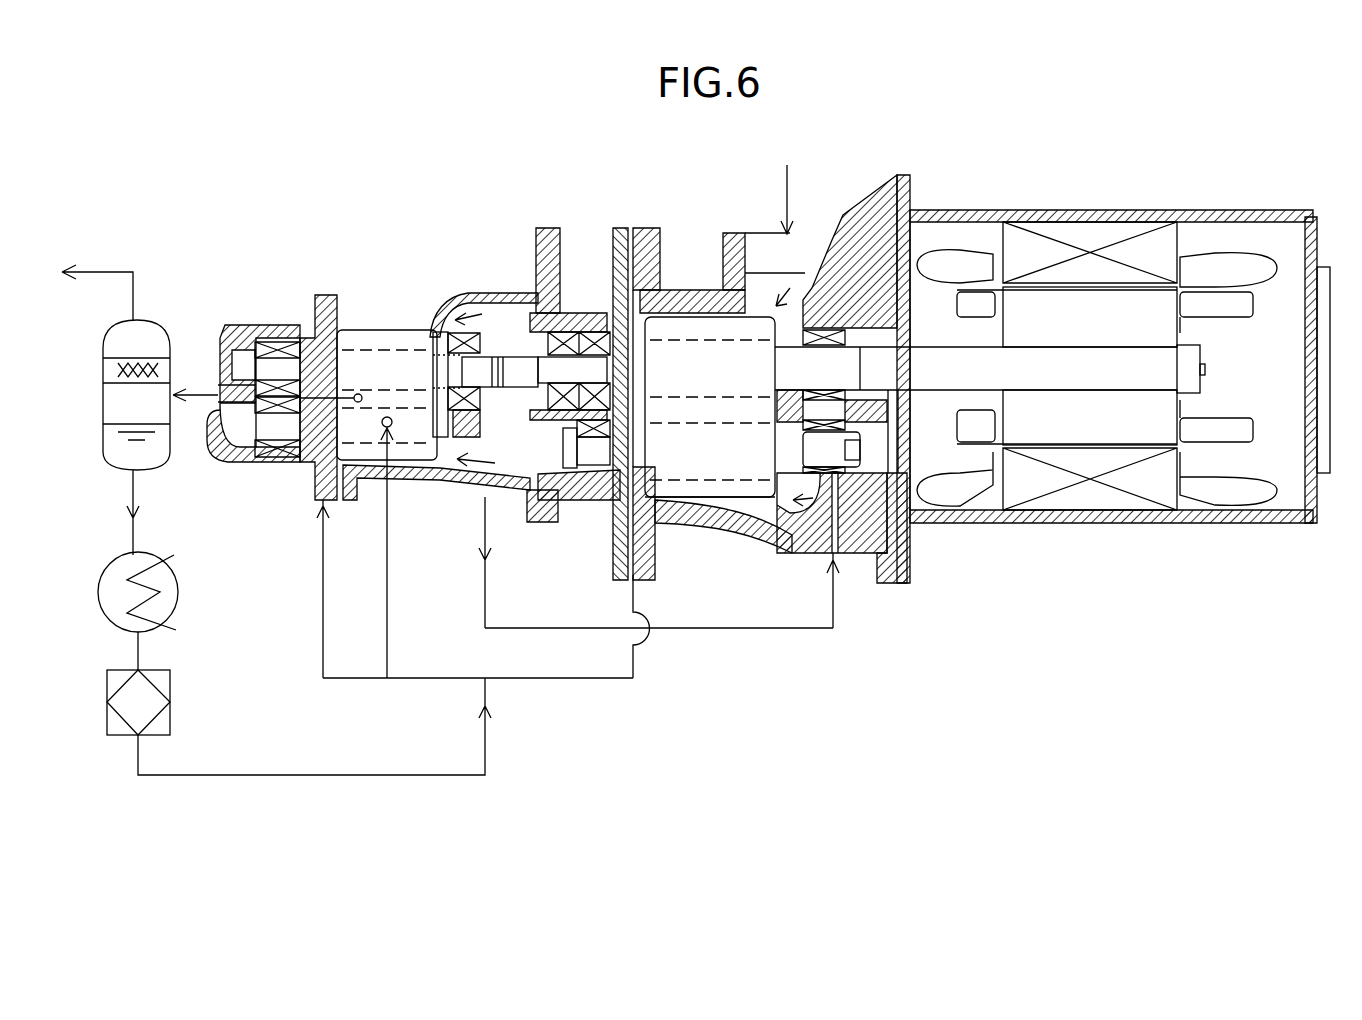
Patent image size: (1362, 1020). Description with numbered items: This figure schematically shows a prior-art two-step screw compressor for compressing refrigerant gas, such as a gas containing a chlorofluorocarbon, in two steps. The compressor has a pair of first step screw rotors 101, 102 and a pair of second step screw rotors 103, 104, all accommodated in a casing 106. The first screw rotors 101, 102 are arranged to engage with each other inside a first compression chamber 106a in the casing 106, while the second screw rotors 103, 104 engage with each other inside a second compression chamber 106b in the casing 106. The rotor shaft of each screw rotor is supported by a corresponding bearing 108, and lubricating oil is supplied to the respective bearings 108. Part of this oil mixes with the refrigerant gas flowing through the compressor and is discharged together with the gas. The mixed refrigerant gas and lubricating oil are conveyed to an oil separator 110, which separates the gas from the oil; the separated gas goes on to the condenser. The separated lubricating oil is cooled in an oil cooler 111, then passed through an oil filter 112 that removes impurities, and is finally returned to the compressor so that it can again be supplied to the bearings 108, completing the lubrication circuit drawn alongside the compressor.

The first step screw rotor 101 is at (665, 330).
The first step screw rotor 102 is at (710, 485).
The second step screw rotor 103 is at (355, 335).
The second step screw rotor 104 is at (365, 460).
The casing 106 is at (905, 180).
The first compression chamber 106a is at (775, 535).
The second compression chamber 106b is at (440, 318).
The bearing 108 is at (275, 340).
The oil separator 110 is at (164, 322).
The oil cooler 111 is at (178, 588).
The oil filter 112 is at (172, 700).